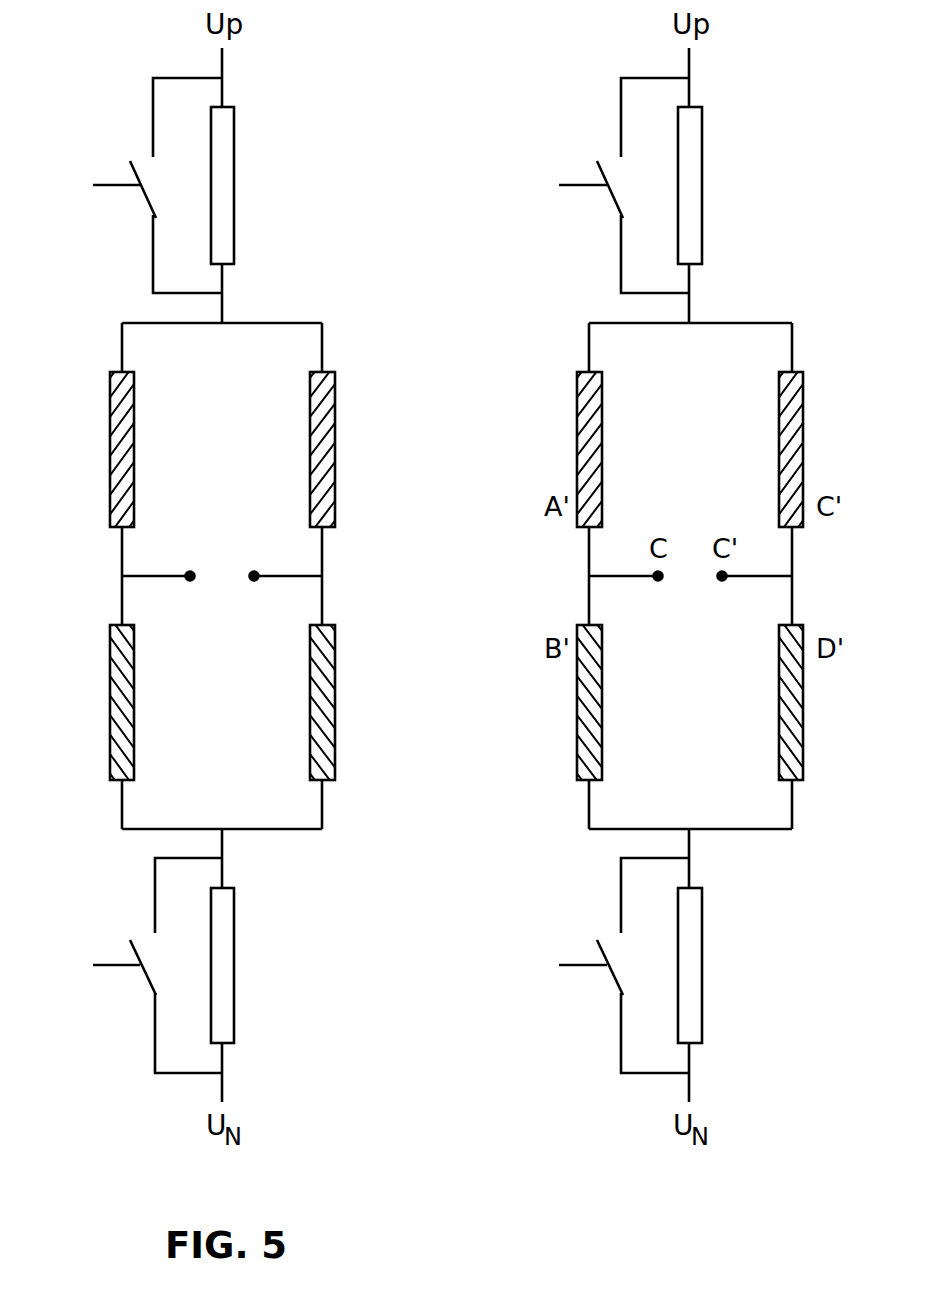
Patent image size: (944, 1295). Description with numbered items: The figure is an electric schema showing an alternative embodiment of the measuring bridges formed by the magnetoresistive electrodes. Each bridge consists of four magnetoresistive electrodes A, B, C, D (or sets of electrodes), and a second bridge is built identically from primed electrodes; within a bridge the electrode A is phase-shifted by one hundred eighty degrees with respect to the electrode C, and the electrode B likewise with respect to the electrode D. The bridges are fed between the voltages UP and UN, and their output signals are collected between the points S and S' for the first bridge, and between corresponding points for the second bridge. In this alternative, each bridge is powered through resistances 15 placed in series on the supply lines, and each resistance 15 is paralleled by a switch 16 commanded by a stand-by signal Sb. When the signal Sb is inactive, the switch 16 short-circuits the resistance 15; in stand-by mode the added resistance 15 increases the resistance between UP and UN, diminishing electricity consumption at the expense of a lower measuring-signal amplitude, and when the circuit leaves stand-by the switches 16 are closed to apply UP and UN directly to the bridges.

The resistance 15 is at (228, 132).
The switch 16 is at (143, 206).
The magnetoresistive electrode A is at (104, 449).
The magnetoresistive electrode B is at (104, 702).
The magnetoresistive electrode C is at (338, 449).
The magnetoresistive electrode D is at (339, 702).
The bridge output point S is at (222, 557).
The stand-by signal Sb is at (327, 575).